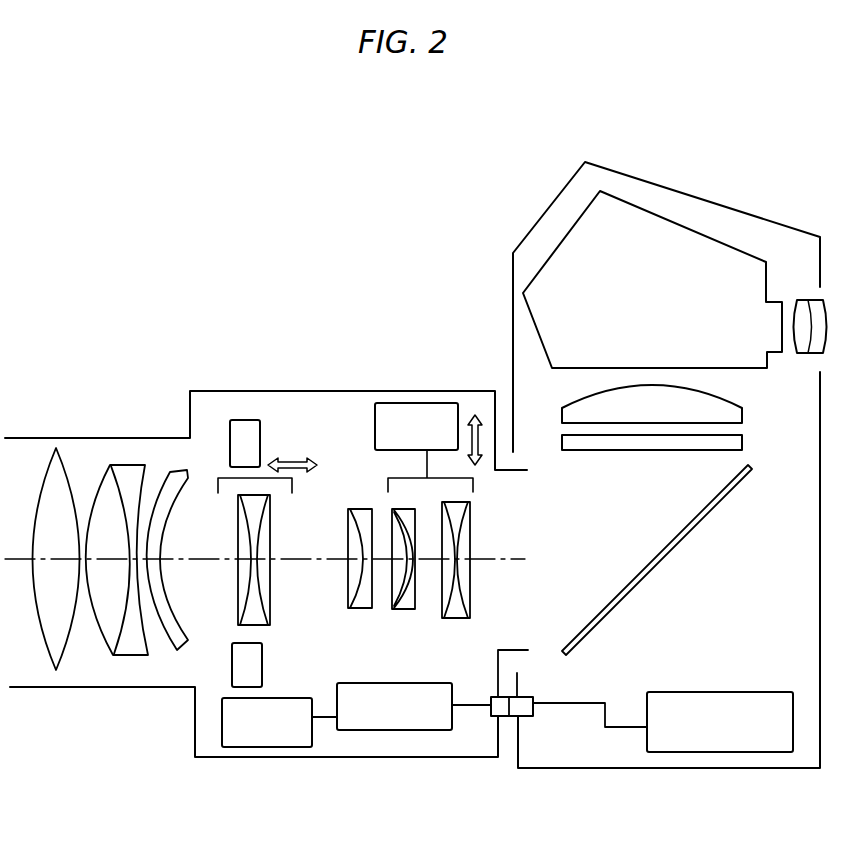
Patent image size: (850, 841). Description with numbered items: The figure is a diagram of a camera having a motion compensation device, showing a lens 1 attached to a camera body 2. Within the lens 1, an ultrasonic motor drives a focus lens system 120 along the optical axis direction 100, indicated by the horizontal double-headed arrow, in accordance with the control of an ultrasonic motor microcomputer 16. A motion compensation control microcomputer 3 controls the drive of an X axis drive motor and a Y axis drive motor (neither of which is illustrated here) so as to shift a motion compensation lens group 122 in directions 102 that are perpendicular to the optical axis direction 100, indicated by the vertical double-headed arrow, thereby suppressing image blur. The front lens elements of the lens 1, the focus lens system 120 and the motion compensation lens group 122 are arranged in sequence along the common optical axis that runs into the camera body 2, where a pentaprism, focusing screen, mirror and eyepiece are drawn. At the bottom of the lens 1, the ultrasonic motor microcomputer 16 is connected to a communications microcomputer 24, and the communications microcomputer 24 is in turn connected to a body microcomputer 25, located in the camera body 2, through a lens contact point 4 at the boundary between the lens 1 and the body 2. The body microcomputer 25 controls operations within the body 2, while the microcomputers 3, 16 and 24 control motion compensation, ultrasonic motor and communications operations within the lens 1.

The lens 1 is at (72, 438).
The camera body 2 is at (630, 200).
The motion compensation control microcomputer 3 is at (398, 418).
The lens contact point 4 is at (492, 717).
The ultrasonic motor microcomputer 16 is at (266, 720).
The communications microcomputer 24 is at (392, 705).
The body microcomputer 25 is at (718, 722).
The optical axis direction 100 is at (288, 457).
The directions perpendicular to the optical axis 102 is at (483, 418).
The focus lens system 120 is at (238, 612).
The motion compensation lens group 122 is at (480, 625).